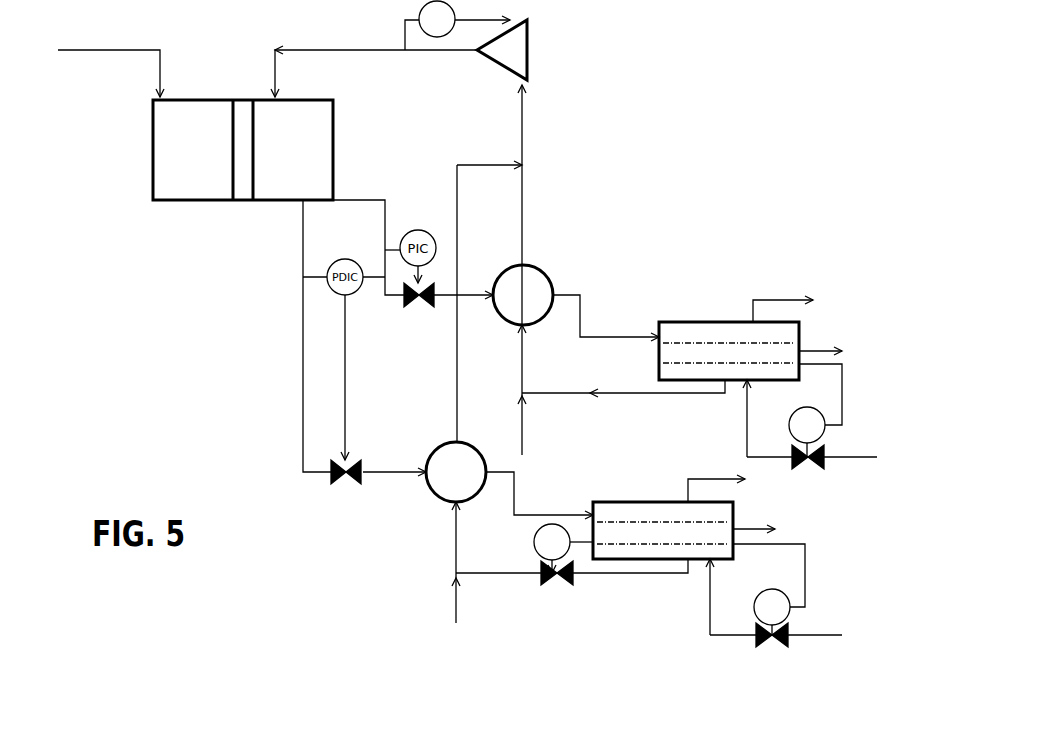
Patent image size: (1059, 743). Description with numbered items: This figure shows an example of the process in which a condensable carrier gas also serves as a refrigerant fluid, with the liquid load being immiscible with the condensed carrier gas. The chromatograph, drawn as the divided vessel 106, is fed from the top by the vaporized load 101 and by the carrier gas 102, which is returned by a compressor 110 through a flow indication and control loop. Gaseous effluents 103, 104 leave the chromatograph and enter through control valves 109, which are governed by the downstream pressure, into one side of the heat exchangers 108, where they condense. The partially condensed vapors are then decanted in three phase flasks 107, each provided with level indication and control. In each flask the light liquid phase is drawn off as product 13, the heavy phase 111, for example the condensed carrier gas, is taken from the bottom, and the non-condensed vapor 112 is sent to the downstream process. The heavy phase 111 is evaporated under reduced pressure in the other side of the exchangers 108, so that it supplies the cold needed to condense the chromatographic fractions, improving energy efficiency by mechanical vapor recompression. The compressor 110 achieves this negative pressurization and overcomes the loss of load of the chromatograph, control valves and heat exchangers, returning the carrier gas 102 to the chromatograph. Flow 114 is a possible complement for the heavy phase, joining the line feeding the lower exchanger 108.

The vaporized load 101 is at (130, 50).
The carrier gas 102 is at (355, 51).
The gaseous effluent 103 is at (354, 197).
The gaseous effluent 104 is at (303, 404).
The reactor 106 is at (198, 188).
The three phase flask 107 is at (705, 320).
The heat exchanger 108 is at (535, 283).
The control valve 109 is at (413, 302).
The compressor 110 is at (527, 50).
The heavy phase 111 is at (567, 395).
The non-condensed vapor 112 is at (793, 300).
The product stream 13 is at (823, 348).
The complement flow 114 is at (452, 583).